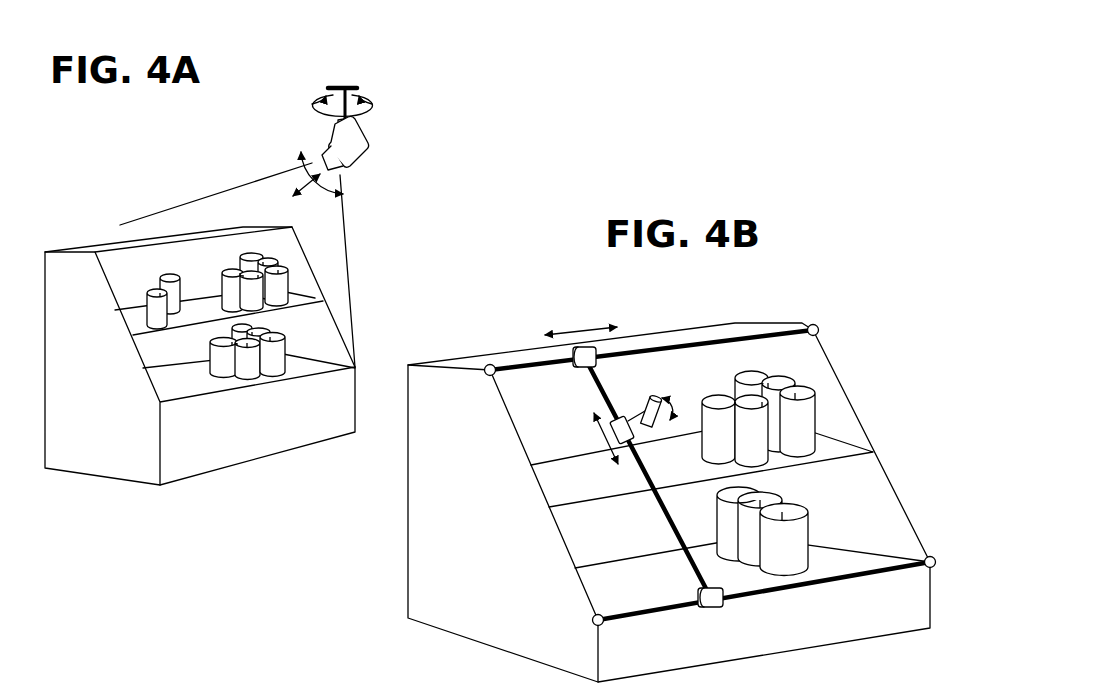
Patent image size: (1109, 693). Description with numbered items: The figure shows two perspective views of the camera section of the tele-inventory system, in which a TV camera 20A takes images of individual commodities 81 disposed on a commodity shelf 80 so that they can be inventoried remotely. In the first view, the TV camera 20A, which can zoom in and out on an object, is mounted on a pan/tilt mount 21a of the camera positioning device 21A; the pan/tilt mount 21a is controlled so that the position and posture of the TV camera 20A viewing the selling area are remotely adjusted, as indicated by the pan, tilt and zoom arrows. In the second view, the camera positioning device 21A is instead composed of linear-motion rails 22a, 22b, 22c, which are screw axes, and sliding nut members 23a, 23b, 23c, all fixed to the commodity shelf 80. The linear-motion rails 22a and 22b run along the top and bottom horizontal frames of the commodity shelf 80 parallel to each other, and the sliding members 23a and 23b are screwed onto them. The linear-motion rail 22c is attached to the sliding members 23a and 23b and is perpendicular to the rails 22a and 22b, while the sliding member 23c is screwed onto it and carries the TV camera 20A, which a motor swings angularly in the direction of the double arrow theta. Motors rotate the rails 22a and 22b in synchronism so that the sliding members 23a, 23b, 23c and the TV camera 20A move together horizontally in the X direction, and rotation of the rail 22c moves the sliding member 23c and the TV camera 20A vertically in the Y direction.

In FIG. 4A, the TV camera 20A is at (368, 160).
In FIG. 4B, the TV camera 20A is at (646, 426).
In FIG. 4A, the camera positioning device 21A is at (302, 112).
In FIG. 4B, the camera positioning device 21A is at (538, 360).
In FIG. 4A, the pan/tilt mount 21a is at (358, 92).
In FIG. 4B, the linear-motion rail 22a is at (652, 348).
In FIG. 4B, the linear-motion rail 22b is at (665, 607).
In FIG. 4B, the linear-motion rail 22c is at (640, 480).
In FIG. 4B, the sliding member 23a is at (597, 360).
In FIG. 4B, the sliding member 23b is at (712, 608).
In FIG. 4B, the sliding member 23c is at (612, 433).
In FIG. 4A, the commodity shelf 80 is at (331, 359).
In FIG. 4B, the commodity shelf 80 is at (786, 321).
In FIG. 4A, the commodity 81 is at (295, 272).
In FIG. 4B, the commodity 81 is at (811, 393).